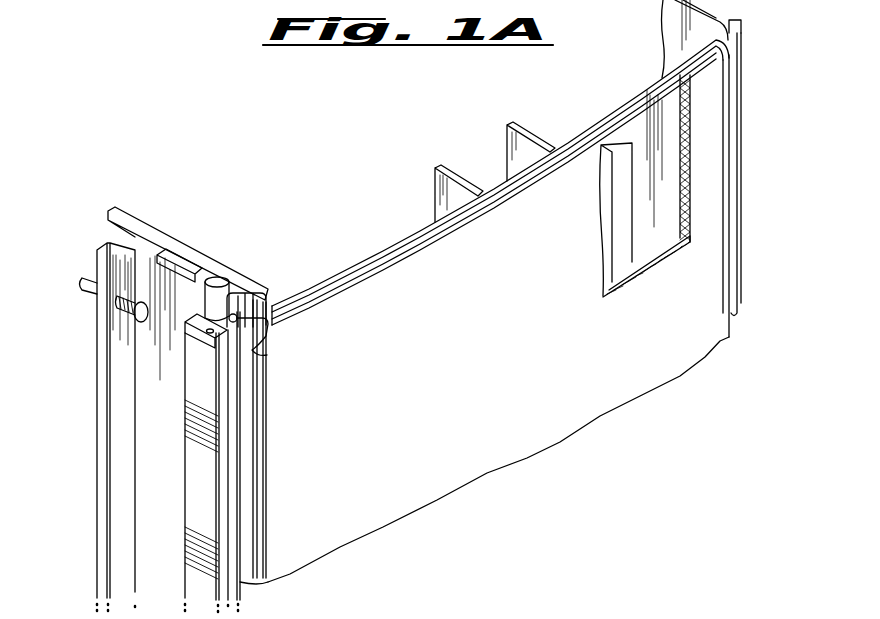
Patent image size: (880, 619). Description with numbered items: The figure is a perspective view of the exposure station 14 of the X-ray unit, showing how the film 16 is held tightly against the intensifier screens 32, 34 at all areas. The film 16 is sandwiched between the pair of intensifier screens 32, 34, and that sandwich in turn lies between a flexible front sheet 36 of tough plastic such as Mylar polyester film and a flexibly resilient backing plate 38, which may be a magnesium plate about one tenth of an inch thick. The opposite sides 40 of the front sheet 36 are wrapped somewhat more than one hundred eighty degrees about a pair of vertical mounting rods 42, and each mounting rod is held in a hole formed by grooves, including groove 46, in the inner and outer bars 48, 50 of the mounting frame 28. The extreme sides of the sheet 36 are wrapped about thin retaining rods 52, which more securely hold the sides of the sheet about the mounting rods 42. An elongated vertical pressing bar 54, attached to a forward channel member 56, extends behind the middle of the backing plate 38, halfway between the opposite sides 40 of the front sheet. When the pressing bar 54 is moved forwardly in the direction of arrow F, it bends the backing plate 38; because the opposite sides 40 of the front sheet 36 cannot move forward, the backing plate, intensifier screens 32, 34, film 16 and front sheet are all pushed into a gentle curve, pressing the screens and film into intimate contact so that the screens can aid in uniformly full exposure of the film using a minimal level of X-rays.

The exposure station 14 is at (371, 172).
The film 16 is at (624, 283).
The mounting frame 28 is at (144, 223).
The intensifier screen 32 is at (604, 243).
The intensifier screen 34 is at (655, 255).
The front sheet 36 is at (517, 366).
The backing plate 38 is at (600, 124).
The opposite sides of the front sheet 40 is at (283, 300).
The vertical mounting rod 42 is at (220, 277).
The groove 46 is at (200, 334).
The inner bar 48 is at (233, 296).
The outer bar 50 is at (195, 502).
The retaining rod 52 is at (267, 355).
The pressing bar 54 is at (505, 183).
The forward channel member 56 is at (435, 204).
The arrow F is at (500, 173).